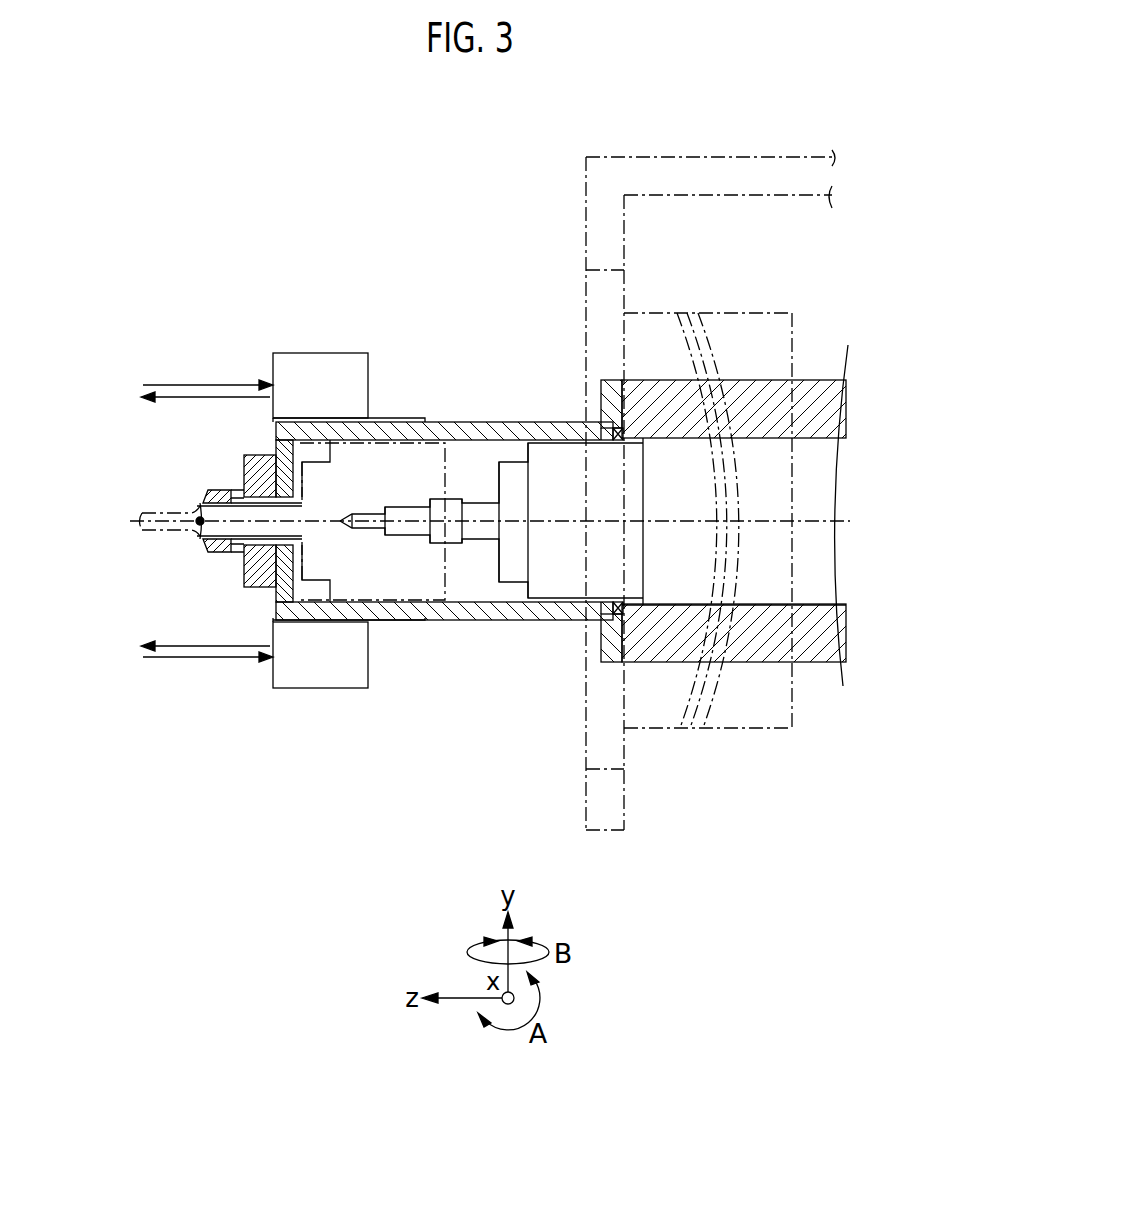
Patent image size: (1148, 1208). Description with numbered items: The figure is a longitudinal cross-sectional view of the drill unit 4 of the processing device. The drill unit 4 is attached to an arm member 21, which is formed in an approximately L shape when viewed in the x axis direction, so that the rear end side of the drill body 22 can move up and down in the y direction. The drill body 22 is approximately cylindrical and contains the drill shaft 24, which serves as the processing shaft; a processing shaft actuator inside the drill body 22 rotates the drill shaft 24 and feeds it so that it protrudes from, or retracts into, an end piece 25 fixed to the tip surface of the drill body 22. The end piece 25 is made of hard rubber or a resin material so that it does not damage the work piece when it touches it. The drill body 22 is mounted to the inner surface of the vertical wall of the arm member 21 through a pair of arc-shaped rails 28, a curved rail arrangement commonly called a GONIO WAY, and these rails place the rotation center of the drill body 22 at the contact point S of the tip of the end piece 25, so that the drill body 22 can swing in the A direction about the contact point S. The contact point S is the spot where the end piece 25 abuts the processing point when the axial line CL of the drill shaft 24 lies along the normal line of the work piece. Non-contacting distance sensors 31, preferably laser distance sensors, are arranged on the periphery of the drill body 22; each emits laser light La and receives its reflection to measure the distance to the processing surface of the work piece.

The drill unit 4 is at (233, 222).
The arm member 21 is at (669, 157).
The drill body 22 is at (522, 421).
The drill shaft 24 is at (400, 506).
The end piece 25 is at (243, 462).
The arc-shaped rails 28 is at (724, 313).
The non-contacting distance sensors 31 is at (318, 353).
The laser light La is at (205, 382).
The contact point S is at (197, 525).
The axial line CL is at (490, 550).